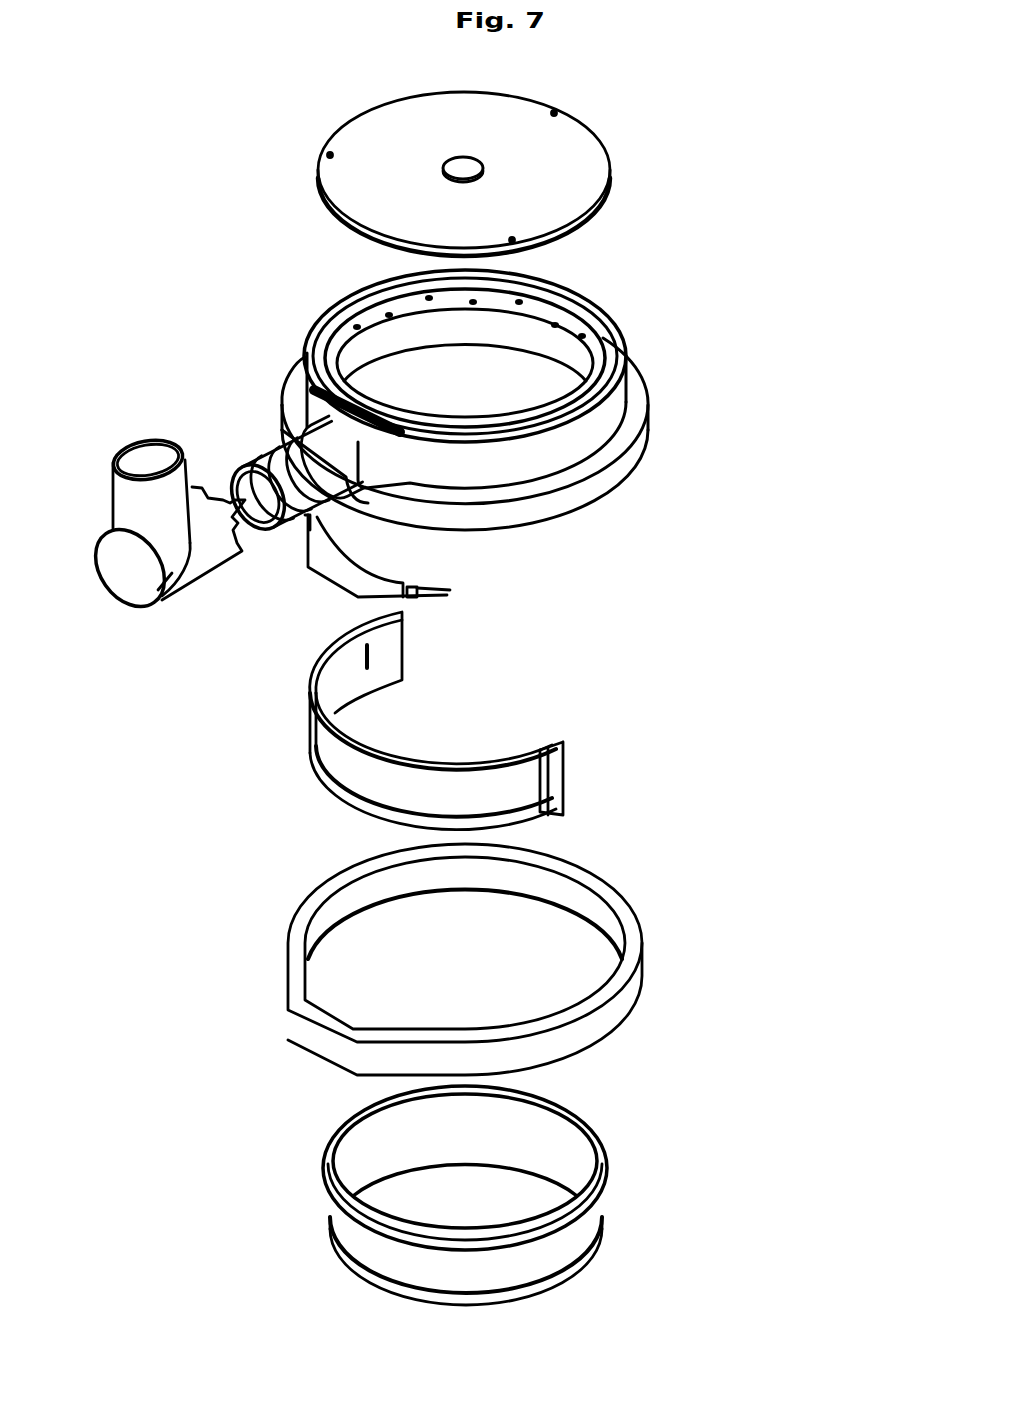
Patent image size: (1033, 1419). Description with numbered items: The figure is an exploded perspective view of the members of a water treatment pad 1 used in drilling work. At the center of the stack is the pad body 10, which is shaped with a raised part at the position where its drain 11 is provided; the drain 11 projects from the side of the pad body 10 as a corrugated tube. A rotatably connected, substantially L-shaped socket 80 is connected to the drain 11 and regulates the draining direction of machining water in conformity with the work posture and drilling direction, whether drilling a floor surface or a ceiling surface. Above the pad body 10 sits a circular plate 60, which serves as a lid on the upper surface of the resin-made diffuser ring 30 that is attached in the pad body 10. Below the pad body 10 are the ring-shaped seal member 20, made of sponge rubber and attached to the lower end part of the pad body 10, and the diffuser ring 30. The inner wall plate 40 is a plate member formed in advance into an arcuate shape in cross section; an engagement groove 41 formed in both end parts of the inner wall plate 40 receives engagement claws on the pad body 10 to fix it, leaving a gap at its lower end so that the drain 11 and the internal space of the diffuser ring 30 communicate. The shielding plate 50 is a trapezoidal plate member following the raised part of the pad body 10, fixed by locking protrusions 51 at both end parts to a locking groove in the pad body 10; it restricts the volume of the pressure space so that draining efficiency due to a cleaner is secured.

The water treatment pad 1 is at (180, 193).
The pad body 10 is at (645, 390).
The drain 11 is at (250, 436).
The ring-shaped seal member 20 is at (638, 950).
The diffuser ring 30 is at (607, 1173).
The inner wall plate 40 is at (520, 721).
The engagement groove 41 is at (515, 748).
The shielding plate 50 is at (421, 611).
The locking protrusion 51 is at (307, 520).
The circular plate 60 is at (592, 153).
The socket 80 is at (158, 600).